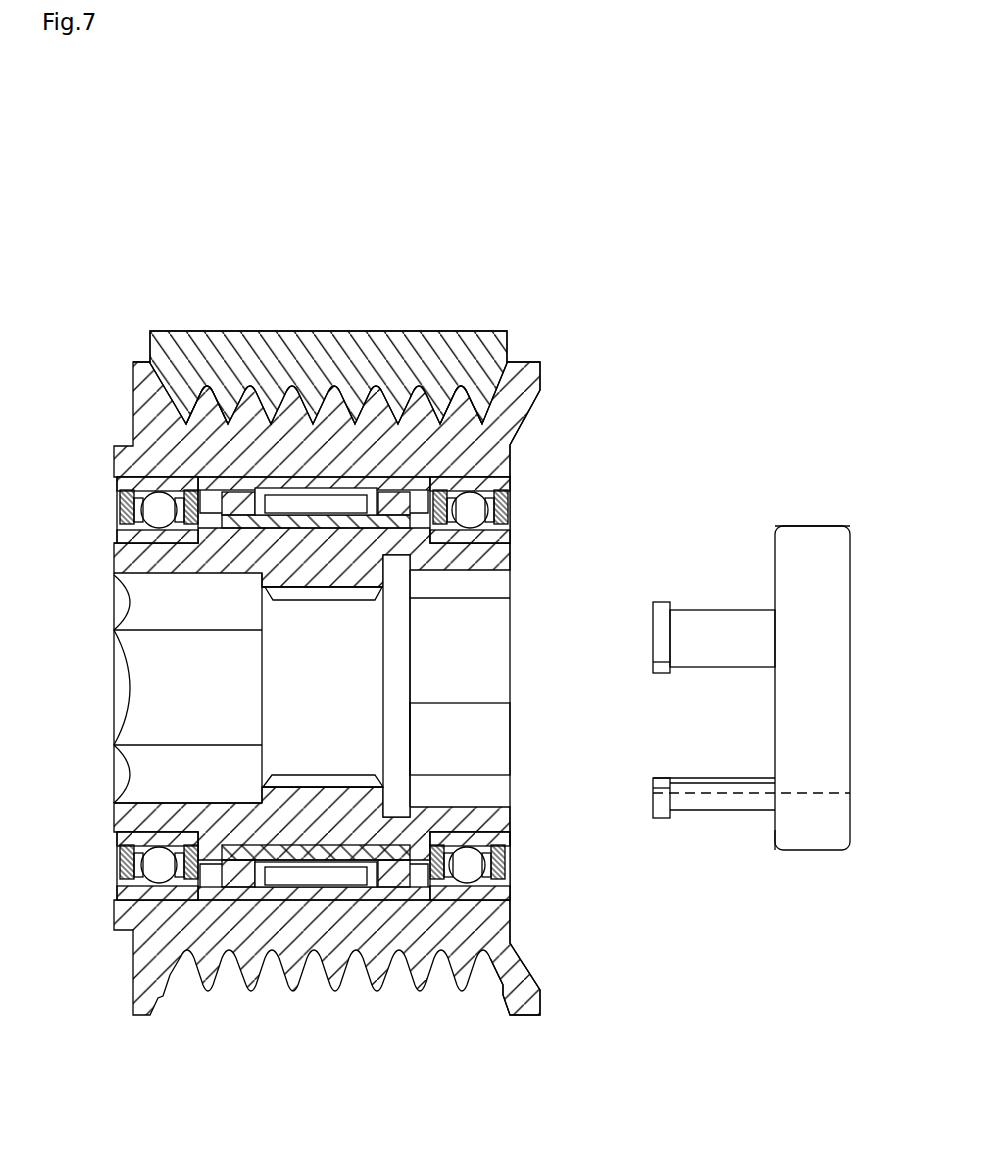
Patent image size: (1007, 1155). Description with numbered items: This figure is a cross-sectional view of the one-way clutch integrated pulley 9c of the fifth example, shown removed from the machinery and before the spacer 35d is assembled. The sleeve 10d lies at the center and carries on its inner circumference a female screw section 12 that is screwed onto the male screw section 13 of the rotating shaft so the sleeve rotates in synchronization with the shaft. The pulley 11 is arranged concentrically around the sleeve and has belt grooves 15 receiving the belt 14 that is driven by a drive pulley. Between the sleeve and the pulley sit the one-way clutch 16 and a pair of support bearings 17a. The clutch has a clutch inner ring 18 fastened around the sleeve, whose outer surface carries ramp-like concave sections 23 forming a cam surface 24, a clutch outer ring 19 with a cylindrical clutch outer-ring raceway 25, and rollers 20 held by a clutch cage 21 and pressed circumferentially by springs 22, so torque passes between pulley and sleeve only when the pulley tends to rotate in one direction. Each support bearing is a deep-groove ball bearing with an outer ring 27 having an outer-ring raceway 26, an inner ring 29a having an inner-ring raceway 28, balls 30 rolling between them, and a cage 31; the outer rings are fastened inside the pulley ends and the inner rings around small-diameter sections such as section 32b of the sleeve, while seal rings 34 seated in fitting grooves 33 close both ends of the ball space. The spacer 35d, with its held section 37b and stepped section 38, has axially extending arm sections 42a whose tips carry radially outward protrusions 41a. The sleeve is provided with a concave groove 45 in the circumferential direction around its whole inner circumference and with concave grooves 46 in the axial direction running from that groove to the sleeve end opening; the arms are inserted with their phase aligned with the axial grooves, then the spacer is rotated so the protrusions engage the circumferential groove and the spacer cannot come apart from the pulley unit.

The one-way clutch integrated pulley 9c is at (348, 250).
The belt 14 is at (226, 395).
The one-way clutch 16 is at (272, 400).
The support bearing 17a is at (180, 420).
The roller 20 is at (290, 500).
The pulley 11 is at (312, 492).
The clutch outer-ring raceway 25 is at (335, 498).
The belt groove 15 is at (397, 475).
The seal ring 34 is at (430, 495).
The fitting groove 33 is at (453, 497).
The outer-ring raceway 26 is at (155, 500).
The outer ring 27 is at (125, 485).
The ball 30 is at (125, 514).
The inner ring 29a is at (118, 545).
The inner-ring raceway 28 is at (150, 550).
The clutch cage 21 is at (232, 522).
The female screw section 12 is at (262, 630).
The concave section 23 is at (298, 592).
The sleeve 10d is at (340, 570).
The concave groove in the circumferential direction 45 is at (397, 560).
The concave groove in the axial direction 46 is at (498, 668).
The small-diameter section 32b is at (167, 808).
The cage 31 is at (130, 850).
The clutch inner ring 18 is at (300, 790).
The cam surface 24 is at (328, 865).
The clutch outer ring 19 is at (272, 893).
The spring 22 is at (318, 877).
The male screw section 13 is at (352, 790).
The spacer 35d is at (818, 558).
The held section 37b is at (791, 568).
The protrusion 41a is at (661, 612).
The arm section 42a is at (722, 622).
The stepped section 38 is at (775, 842).